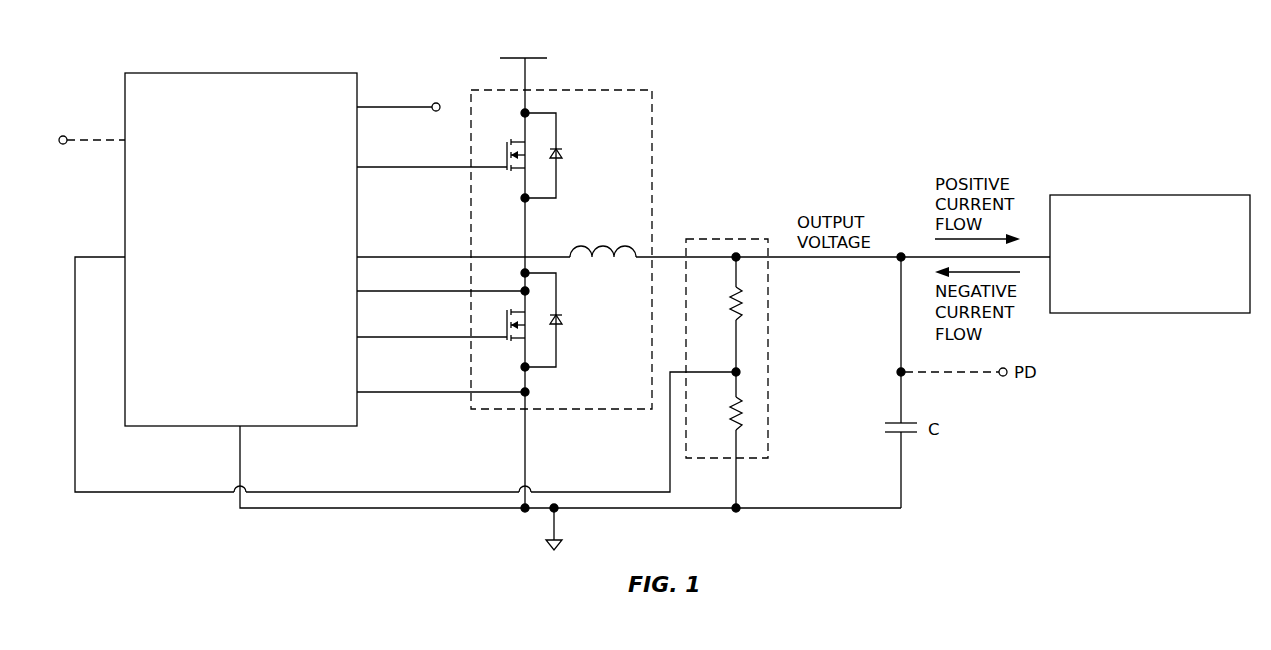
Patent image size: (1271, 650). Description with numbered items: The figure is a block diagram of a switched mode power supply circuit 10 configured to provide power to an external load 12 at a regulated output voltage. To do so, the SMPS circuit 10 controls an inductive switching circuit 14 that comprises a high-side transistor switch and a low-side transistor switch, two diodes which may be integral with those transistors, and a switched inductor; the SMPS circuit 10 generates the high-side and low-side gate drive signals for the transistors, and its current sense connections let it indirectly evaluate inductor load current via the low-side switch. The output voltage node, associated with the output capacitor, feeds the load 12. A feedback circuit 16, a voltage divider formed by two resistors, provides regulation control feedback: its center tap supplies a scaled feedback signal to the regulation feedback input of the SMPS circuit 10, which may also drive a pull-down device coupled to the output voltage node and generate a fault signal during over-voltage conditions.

The switched mode power supply circuit 10 is at (290, 73).
The external load 12 is at (1200, 195).
The switching circuit 14 is at (653, 122).
The feedback circuit 16 is at (714, 239).